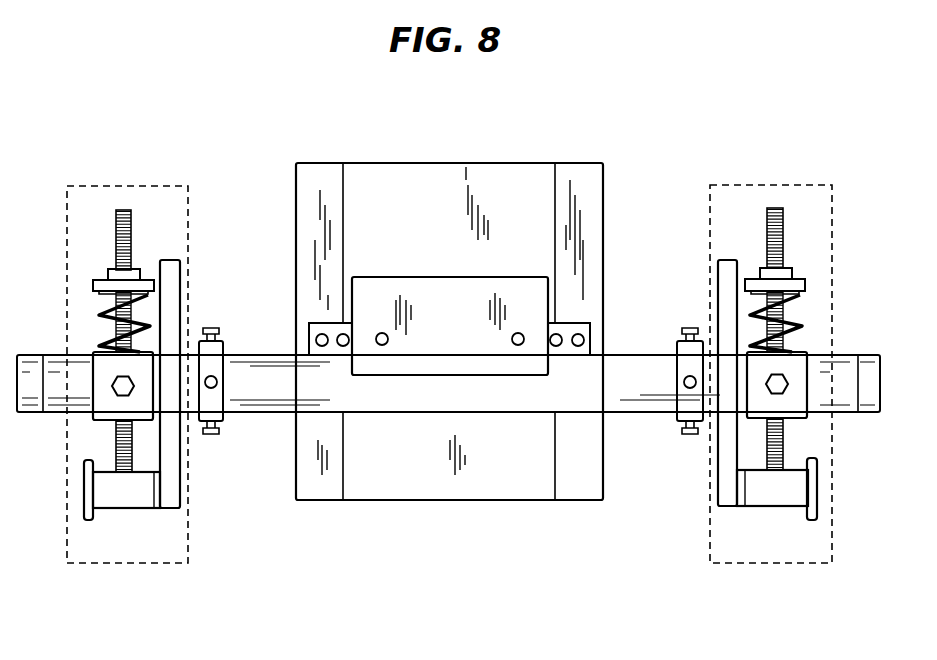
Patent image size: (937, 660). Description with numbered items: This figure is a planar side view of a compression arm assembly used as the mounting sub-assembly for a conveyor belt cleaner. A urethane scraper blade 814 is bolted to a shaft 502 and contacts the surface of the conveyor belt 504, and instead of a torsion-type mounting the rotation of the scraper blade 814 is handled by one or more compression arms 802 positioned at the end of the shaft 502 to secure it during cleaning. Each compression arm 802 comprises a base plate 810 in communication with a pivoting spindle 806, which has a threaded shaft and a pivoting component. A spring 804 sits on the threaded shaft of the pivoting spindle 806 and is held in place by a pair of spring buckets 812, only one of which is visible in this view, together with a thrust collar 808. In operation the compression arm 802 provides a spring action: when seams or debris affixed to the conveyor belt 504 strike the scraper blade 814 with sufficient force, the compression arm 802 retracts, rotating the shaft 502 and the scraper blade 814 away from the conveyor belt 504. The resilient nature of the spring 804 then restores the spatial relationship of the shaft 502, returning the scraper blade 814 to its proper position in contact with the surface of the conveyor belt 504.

The shaft 502 is at (256, 396).
The conveyor belt 504 is at (588, 228).
The compression arm 802 is at (150, 563).
The spring 804 is at (796, 312).
The pivoting spindle 806 is at (782, 210).
The thrust collar 808 is at (800, 400).
The base plate 810 is at (727, 482).
The spring bucket 812 is at (794, 278).
The urethane scraper blade 814 is at (534, 297).